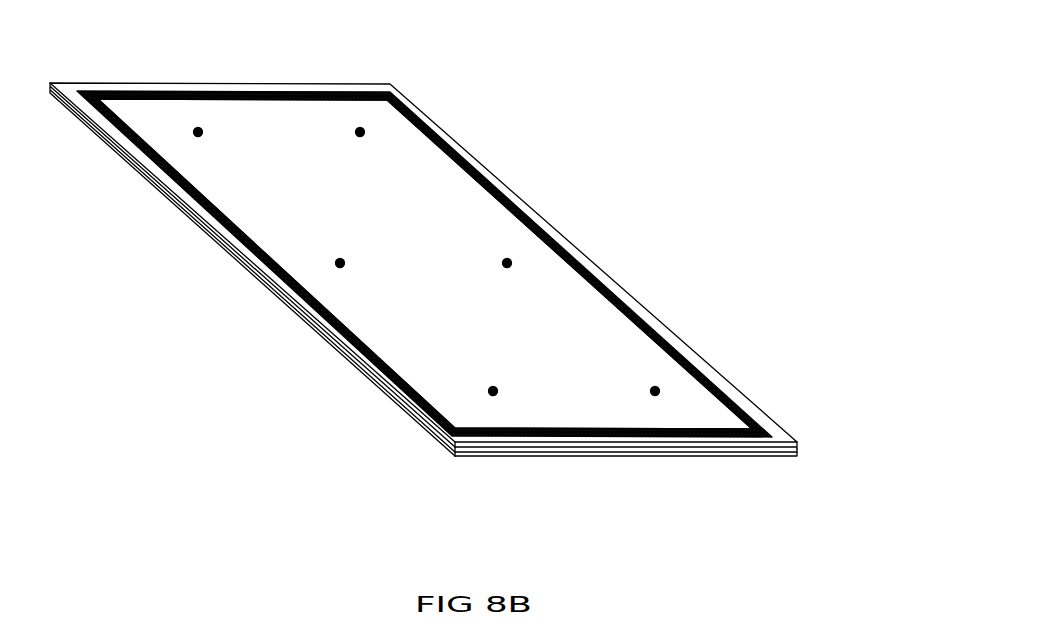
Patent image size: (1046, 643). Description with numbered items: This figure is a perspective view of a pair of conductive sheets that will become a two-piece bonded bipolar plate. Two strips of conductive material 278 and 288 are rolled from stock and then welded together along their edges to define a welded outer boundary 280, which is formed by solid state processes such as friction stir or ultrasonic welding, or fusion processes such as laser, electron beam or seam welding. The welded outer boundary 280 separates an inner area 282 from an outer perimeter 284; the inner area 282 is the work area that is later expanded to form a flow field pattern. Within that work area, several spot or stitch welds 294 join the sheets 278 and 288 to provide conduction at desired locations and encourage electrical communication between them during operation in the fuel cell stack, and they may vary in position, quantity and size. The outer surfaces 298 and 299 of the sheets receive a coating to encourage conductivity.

The strip of conductive material 278 is at (368, 360).
The outer boundary 280 is at (570, 438).
The inner area 282 is at (440, 187).
The outer perimeter 284 is at (441, 126).
The strip of conductive material 288 is at (475, 453).
The spot or stitch welds 294 is at (360, 128).
The outer surface 298 is at (784, 425).
The outer surface 299 is at (785, 462).